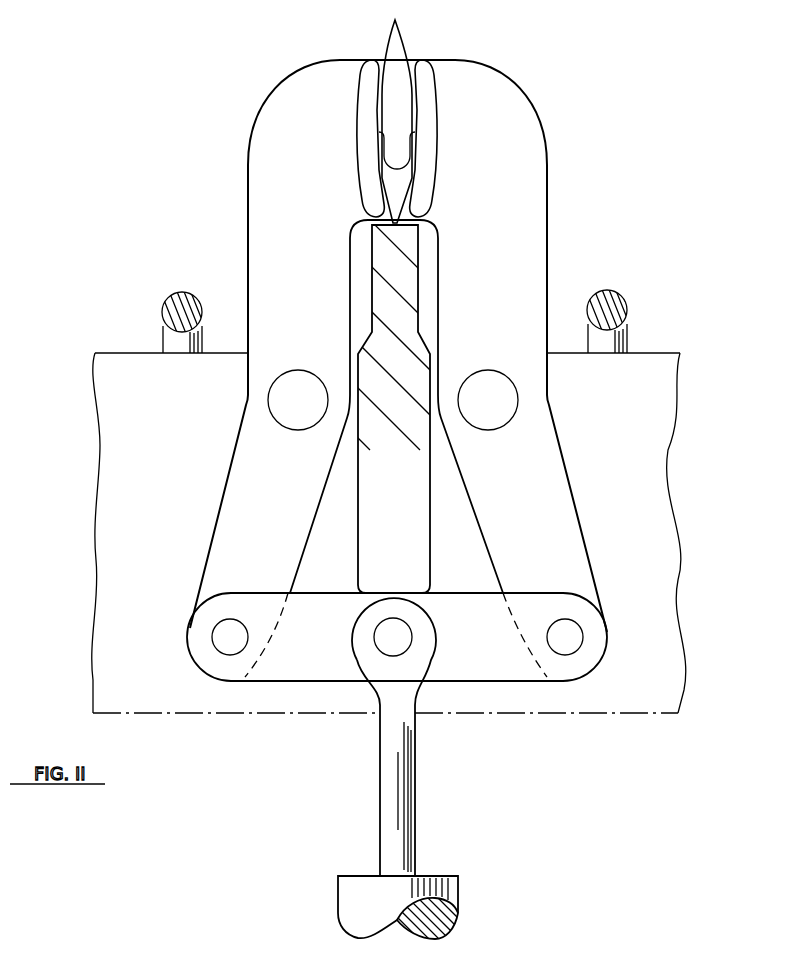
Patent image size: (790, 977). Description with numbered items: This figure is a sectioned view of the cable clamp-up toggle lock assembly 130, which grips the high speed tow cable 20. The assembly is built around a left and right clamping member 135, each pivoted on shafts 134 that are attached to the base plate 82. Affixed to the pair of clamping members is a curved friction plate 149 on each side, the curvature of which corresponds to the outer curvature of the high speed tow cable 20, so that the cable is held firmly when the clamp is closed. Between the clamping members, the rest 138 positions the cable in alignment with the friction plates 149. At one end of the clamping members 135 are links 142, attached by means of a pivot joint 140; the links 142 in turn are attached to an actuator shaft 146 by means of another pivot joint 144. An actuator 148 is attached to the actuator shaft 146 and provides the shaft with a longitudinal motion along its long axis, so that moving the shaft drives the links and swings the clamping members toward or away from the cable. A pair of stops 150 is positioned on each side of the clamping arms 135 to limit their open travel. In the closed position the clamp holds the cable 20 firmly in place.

The high speed tow cable 20 is at (393, 55).
The base plate 82 is at (645, 563).
The cable clamp-up toggle lock assembly 130 is at (354, 346).
The shafts 134 is at (295, 412).
The clamping member 135 is at (478, 113).
The rest 138 is at (414, 492).
The pivot joint 140 is at (218, 636).
The links 142 is at (322, 658).
The pivot joint 144 is at (387, 642).
The actuator shaft 146 is at (390, 757).
The actuator 148 is at (437, 880).
The curved friction plate 149 is at (367, 97).
The stops 150 is at (163, 305).